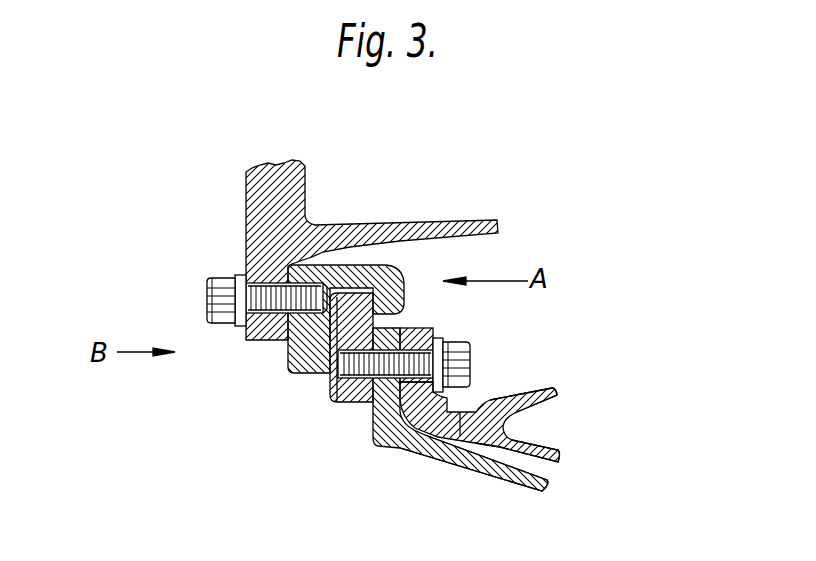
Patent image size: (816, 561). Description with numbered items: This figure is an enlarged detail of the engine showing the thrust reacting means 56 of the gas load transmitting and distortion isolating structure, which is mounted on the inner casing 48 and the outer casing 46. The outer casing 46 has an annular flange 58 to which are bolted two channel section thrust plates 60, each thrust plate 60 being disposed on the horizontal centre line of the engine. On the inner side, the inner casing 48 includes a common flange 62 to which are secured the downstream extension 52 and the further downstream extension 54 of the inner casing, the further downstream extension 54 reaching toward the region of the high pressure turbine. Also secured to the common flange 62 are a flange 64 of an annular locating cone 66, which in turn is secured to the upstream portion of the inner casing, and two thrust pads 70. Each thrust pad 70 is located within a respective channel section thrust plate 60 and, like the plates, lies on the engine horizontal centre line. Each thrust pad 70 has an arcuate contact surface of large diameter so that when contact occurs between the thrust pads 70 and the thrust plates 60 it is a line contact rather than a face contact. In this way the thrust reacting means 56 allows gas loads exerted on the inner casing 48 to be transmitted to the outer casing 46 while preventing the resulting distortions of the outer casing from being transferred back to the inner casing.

The outer casing 46 is at (390, 227).
The channel section thrust plate 60 is at (400, 268).
The annular flange 58 is at (262, 342).
The common flange 62 is at (418, 327).
The thrust pad 70 is at (350, 400).
The flange 64 is at (387, 433).
The annular locating cone 66 is at (470, 463).
The inner casing 48 is at (528, 386).
The further downstream extension 54 is at (557, 390).
The downstream extension 52 is at (553, 450).
The thrust reacting means 56 is at (358, 437).